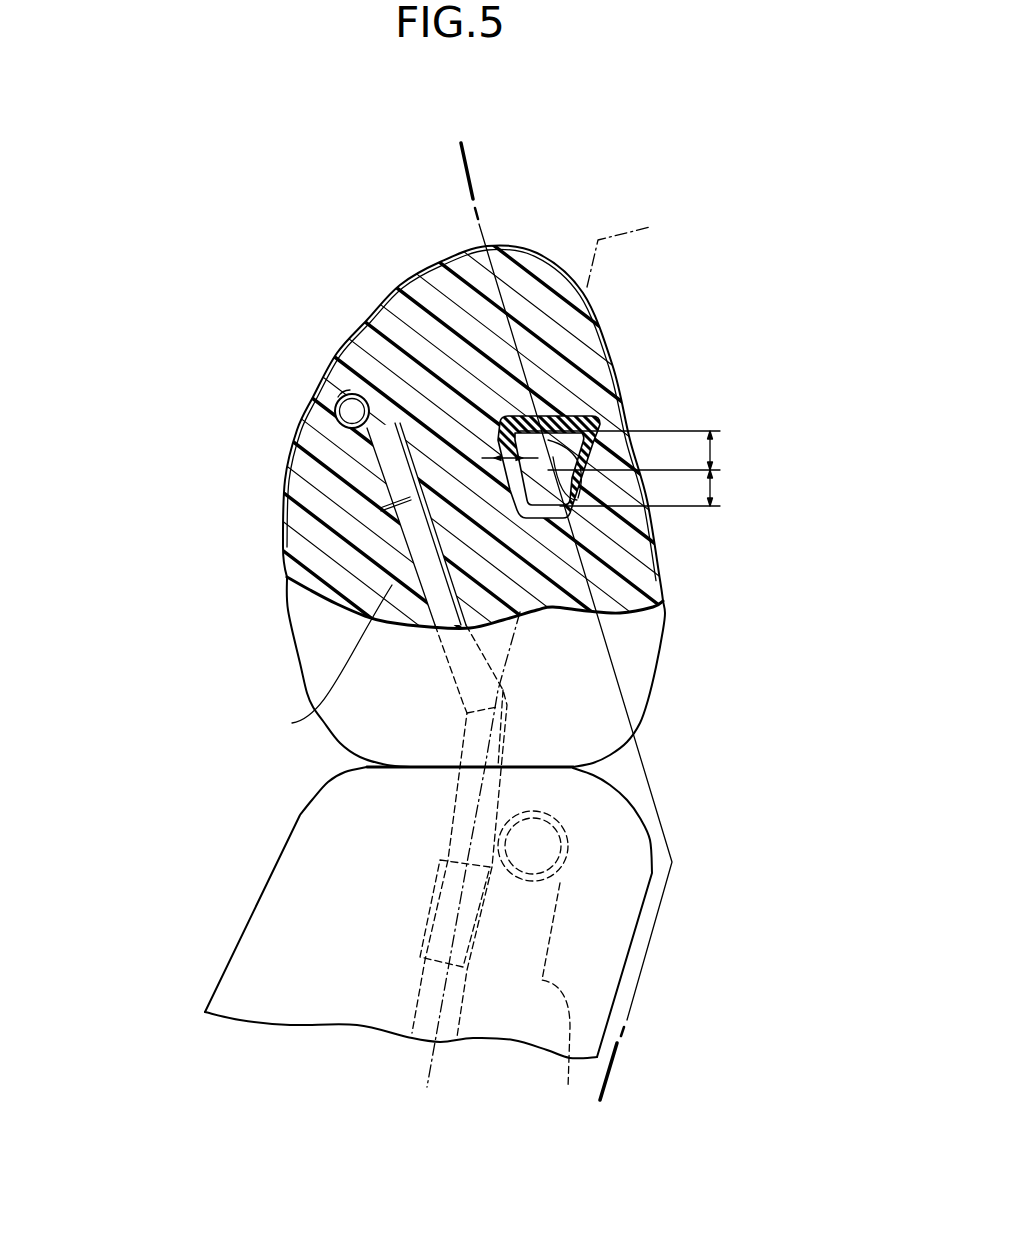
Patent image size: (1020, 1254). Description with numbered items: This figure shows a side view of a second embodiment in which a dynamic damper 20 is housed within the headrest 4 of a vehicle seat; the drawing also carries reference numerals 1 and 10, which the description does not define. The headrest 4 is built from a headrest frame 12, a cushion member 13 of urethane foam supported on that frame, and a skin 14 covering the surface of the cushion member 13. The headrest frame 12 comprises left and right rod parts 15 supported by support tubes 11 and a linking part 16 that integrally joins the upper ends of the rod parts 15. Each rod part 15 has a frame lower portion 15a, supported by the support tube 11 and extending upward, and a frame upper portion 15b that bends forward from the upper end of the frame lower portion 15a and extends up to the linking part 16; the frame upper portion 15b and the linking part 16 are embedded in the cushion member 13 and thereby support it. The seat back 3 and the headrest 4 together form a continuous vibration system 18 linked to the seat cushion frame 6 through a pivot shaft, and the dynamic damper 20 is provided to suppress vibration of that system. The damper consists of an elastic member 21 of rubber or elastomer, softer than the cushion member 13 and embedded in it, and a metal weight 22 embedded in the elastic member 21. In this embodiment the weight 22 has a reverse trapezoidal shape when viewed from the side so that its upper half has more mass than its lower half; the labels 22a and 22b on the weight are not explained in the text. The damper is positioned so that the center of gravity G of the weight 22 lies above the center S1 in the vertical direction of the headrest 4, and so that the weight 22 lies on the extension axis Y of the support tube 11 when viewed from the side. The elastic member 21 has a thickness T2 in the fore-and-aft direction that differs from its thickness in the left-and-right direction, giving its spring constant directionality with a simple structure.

The steering wheel 1 is at (460, 587).
The seat back 3 is at (252, 938).
The headrest 4 is at (305, 636).
The seat cushion frame 6 is at (480, 150).
The bracket 10 is at (538, 962).
The support tube 11 is at (427, 927).
The headrest frame 12 is at (380, 538).
The cushion member 13 is at (413, 310).
The skin 14 is at (537, 253).
The rod part 15 is at (355, 714).
The frame lower portion 15a is at (462, 843).
The frame upper portion 15b is at (321, 661).
The linking part 16 is at (339, 396).
The vibration system 18 is at (386, 651).
The dynamic damper 20 is at (497, 406).
The elastic member 21 is at (565, 416).
The weight 22 is at (670, 313).
The upper recess portion 22a is at (715, 451).
The lower recess portion 22b is at (715, 489).
The center of gravity G is at (598, 445).
The center in the vertical direction of the headrest S1 is at (580, 478).
The thickness in the fore-and-aft direction T2 is at (503, 447).
The extension axis Y is at (628, 250).